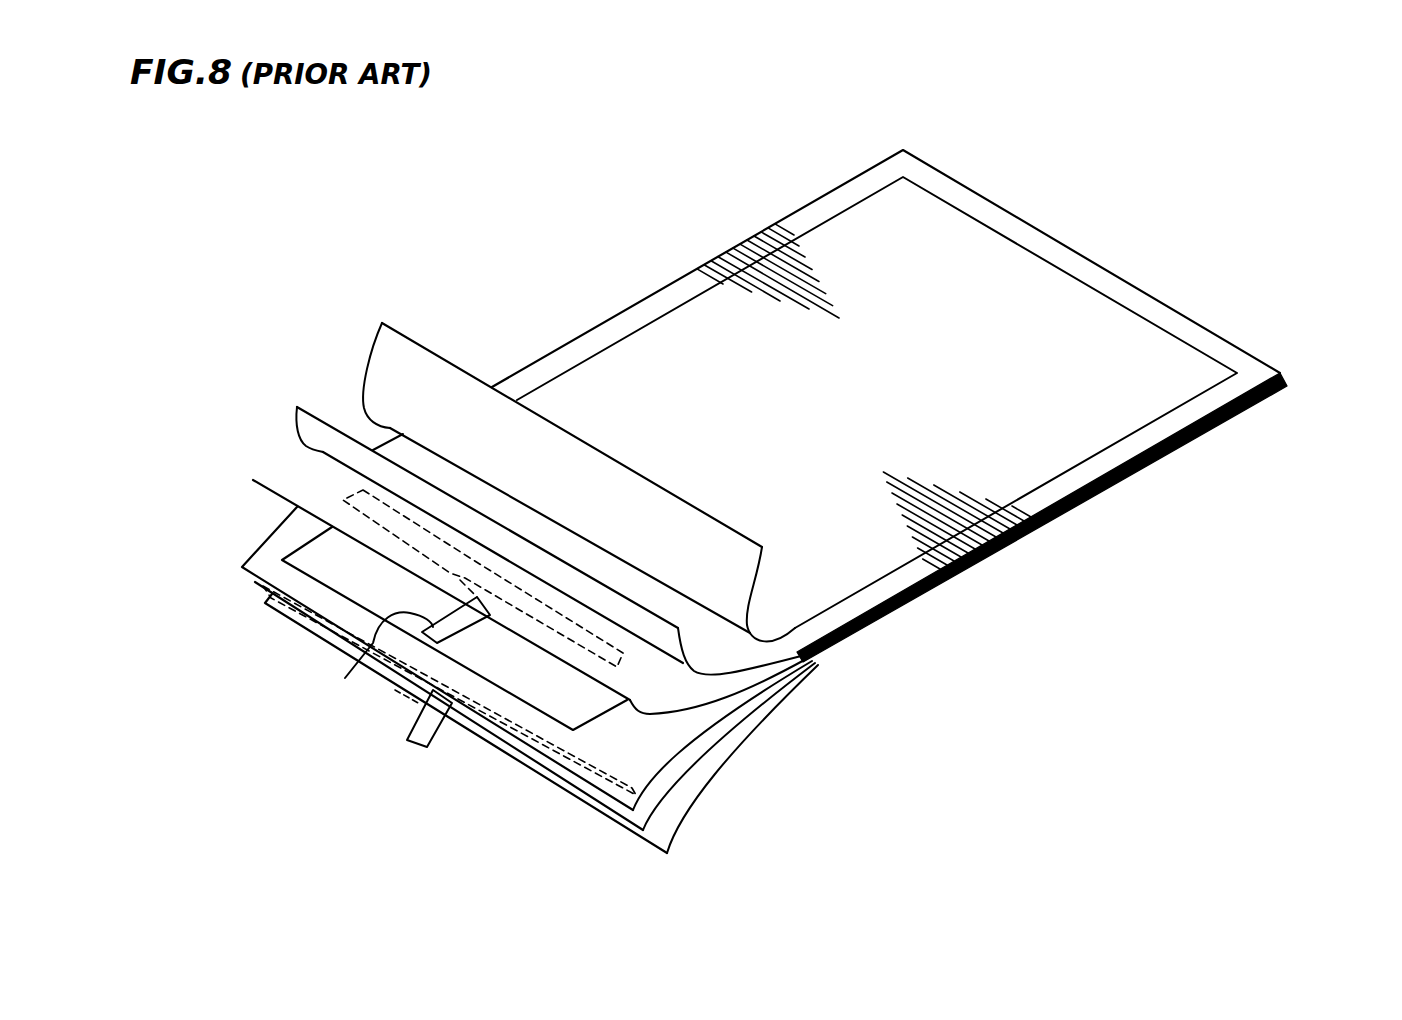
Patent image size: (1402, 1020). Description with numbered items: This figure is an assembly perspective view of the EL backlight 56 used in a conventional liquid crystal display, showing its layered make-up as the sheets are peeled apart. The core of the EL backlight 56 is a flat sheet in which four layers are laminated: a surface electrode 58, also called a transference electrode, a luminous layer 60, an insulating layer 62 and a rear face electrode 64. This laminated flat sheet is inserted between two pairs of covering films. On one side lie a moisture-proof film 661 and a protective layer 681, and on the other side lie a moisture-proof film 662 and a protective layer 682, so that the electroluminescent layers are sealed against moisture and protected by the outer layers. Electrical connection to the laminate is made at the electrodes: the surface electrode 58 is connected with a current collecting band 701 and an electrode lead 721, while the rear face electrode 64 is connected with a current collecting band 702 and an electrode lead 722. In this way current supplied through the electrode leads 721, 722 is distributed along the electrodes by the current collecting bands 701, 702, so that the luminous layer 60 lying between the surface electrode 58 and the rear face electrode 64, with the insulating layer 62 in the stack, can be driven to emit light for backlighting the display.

The EL backlight 56 is at (1248, 279).
The protective layer 681 is at (430, 388).
The moisture-proof film 661 is at (550, 483).
The surface electrode 58 is at (288, 485).
The luminous layer 60 is at (315, 548).
The insulating layer 62 is at (268, 567).
The rear face electrode 64 is at (255, 580).
The current collecting band 701 is at (337, 497).
The current collecting band 702 is at (262, 598).
The moisture-proof film 662 is at (265, 620).
The electrode lead 721 is at (395, 628).
The protective layer 682 is at (392, 683).
The electrode lead 722 is at (418, 728).